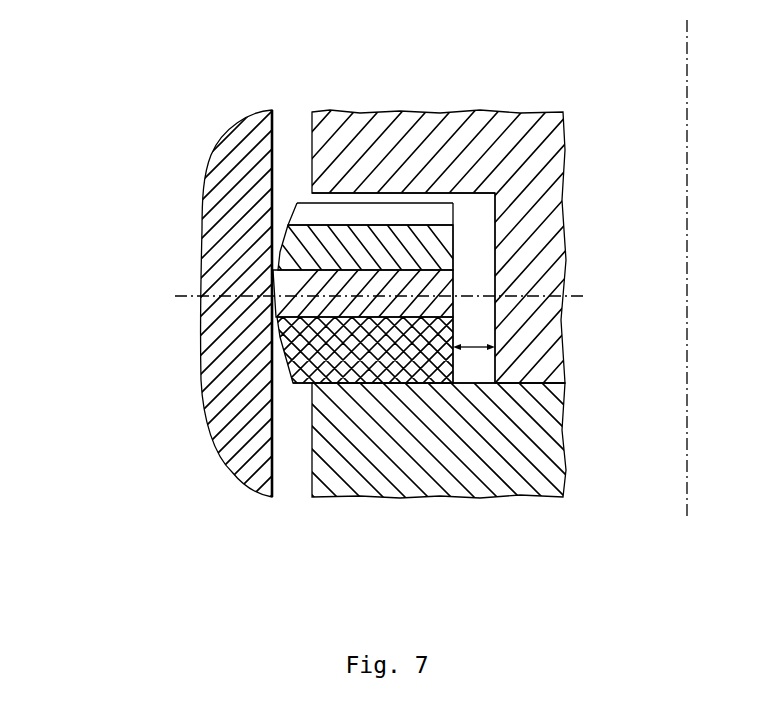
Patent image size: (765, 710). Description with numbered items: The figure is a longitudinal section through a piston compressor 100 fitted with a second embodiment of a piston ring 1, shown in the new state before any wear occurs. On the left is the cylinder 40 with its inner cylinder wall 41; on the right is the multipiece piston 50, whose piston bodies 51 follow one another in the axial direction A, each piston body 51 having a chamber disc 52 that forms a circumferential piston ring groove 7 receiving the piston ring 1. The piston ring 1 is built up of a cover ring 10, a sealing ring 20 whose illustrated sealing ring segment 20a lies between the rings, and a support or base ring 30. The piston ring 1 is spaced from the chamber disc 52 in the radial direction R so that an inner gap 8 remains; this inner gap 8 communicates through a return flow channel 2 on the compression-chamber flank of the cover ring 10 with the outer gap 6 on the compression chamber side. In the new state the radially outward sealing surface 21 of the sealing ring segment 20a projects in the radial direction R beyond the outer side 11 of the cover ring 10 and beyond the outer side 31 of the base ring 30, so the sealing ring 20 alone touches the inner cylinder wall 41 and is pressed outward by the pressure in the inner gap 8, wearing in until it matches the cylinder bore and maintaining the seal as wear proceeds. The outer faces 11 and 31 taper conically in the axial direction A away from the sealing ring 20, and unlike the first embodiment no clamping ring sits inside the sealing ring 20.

The piston compressor 100 is at (235, 76).
The piston ring 1 is at (123, 183).
The return flow channel 2 is at (295, 210).
The outer gap 6 is at (303, 132).
The piston ring groove 7 is at (384, 200).
The inner gap 8 is at (490, 343).
The first annular body 10 is at (455, 244).
The outer side of the cover ring 11 is at (265, 258).
The sealing ring 20 is at (455, 284).
The sealing ring segment 20a is at (265, 331).
The sealing surface 21 is at (265, 283).
The third annular body 30 is at (305, 350).
The outer side of the base ring 31 is at (293, 380).
The cylinder 40 is at (229, 480).
The inner cylinder wall 41 is at (278, 150).
The piston 50 is at (411, 266).
The piston body 51 is at (545, 362).
The chamber disc 52 is at (535, 145).
The radial direction R is at (368, 297).
The axial direction A is at (687, 287).